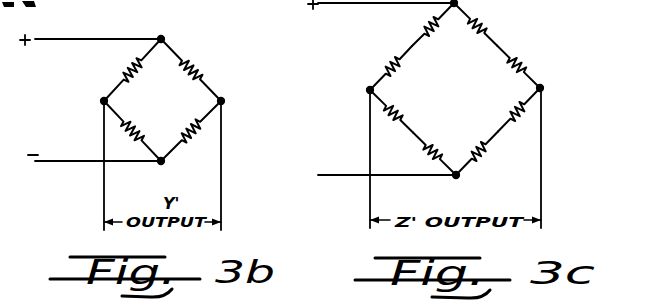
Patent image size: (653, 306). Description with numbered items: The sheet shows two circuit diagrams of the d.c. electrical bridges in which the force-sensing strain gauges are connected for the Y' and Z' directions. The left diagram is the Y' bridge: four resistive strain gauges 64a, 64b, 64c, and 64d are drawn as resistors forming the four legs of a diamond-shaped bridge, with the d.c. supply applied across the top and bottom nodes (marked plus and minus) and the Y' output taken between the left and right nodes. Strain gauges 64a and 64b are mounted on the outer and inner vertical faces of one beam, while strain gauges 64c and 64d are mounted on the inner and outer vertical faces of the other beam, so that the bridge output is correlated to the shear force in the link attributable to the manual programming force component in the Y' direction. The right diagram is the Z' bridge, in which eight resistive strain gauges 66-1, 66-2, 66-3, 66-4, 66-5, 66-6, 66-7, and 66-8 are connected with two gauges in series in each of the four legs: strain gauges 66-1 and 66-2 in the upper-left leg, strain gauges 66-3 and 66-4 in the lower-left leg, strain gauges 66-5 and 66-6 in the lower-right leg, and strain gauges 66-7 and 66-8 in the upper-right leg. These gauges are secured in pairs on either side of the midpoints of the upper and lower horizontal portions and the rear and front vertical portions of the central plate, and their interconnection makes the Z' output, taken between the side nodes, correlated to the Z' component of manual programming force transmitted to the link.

In FIG. 3b, the resistive strain gauge 64a is at (124, 69).
In FIG. 3b, the resistive strain gauge 64b is at (126, 130).
In FIG. 3b, the resistive strain gauge 64c is at (200, 133).
In FIG. 3b, the resistive strain gauge 64d is at (204, 70).
In FIG. 3c, the resistive strain gauge 66-1 is at (425, 24).
In FIG. 3c, the resistive strain gauge 66-2 is at (382, 69).
In FIG. 3c, the resistive strain gauge 66-3 is at (403, 101).
In FIG. 3c, the resistive strain gauge 66-4 is at (446, 137).
In FIG. 3c, the resistive strain gauge 66-5 is at (487, 157).
In FIG. 3c, the resistive strain gauge 66-6 is at (527, 115).
In FIG. 3c, the resistive strain gauge 66-7 is at (526, 69).
In FIG. 3c, the resistive strain gauge 66-8 is at (487, 17).